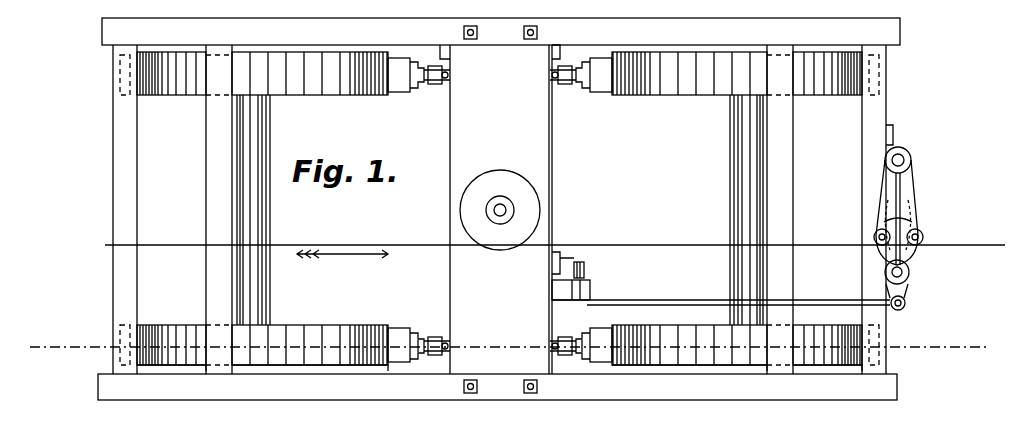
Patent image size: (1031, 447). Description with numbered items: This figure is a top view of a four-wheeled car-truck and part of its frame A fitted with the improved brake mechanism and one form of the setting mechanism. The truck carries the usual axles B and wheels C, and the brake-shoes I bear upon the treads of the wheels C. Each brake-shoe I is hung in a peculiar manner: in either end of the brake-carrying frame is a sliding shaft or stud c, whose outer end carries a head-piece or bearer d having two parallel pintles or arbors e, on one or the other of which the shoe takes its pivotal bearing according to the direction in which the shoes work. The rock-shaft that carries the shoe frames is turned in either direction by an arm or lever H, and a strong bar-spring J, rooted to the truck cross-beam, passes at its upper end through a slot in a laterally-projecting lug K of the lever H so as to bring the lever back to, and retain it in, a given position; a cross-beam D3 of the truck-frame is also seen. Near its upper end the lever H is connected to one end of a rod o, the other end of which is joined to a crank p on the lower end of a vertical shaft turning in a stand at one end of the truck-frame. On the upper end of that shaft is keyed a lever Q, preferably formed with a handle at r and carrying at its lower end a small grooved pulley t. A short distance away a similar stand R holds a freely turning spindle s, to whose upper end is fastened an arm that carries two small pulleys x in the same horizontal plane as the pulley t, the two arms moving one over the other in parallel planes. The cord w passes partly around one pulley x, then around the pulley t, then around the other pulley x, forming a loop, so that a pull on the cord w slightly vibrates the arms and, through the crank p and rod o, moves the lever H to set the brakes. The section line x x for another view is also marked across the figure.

The frame A is at (509, 208).
The axles B is at (500, 210).
The wheels C is at (499, 211).
The brake-shoes I is at (500, 210).
The pintles or arbors e is at (501, 201).
The sliding shaft or stud c is at (501, 210).
The head-piece or bearer d is at (502, 344).
The cross-beam D3 is at (500, 236).
The bar-spring J is at (563, 263).
The lug K is at (589, 271).
The arm or lever H is at (571, 290).
The rod o is at (721, 295).
The cord w is at (557, 243).
The pulleys or sheaves x is at (926, 232).
The stand R is at (902, 135).
The shaft or spindle s is at (912, 158).
The sheave or grooved pulley t is at (913, 205).
The handle r is at (898, 219).
The spring u is at (894, 211).
The lever Q is at (909, 270).
The crank p is at (904, 296).